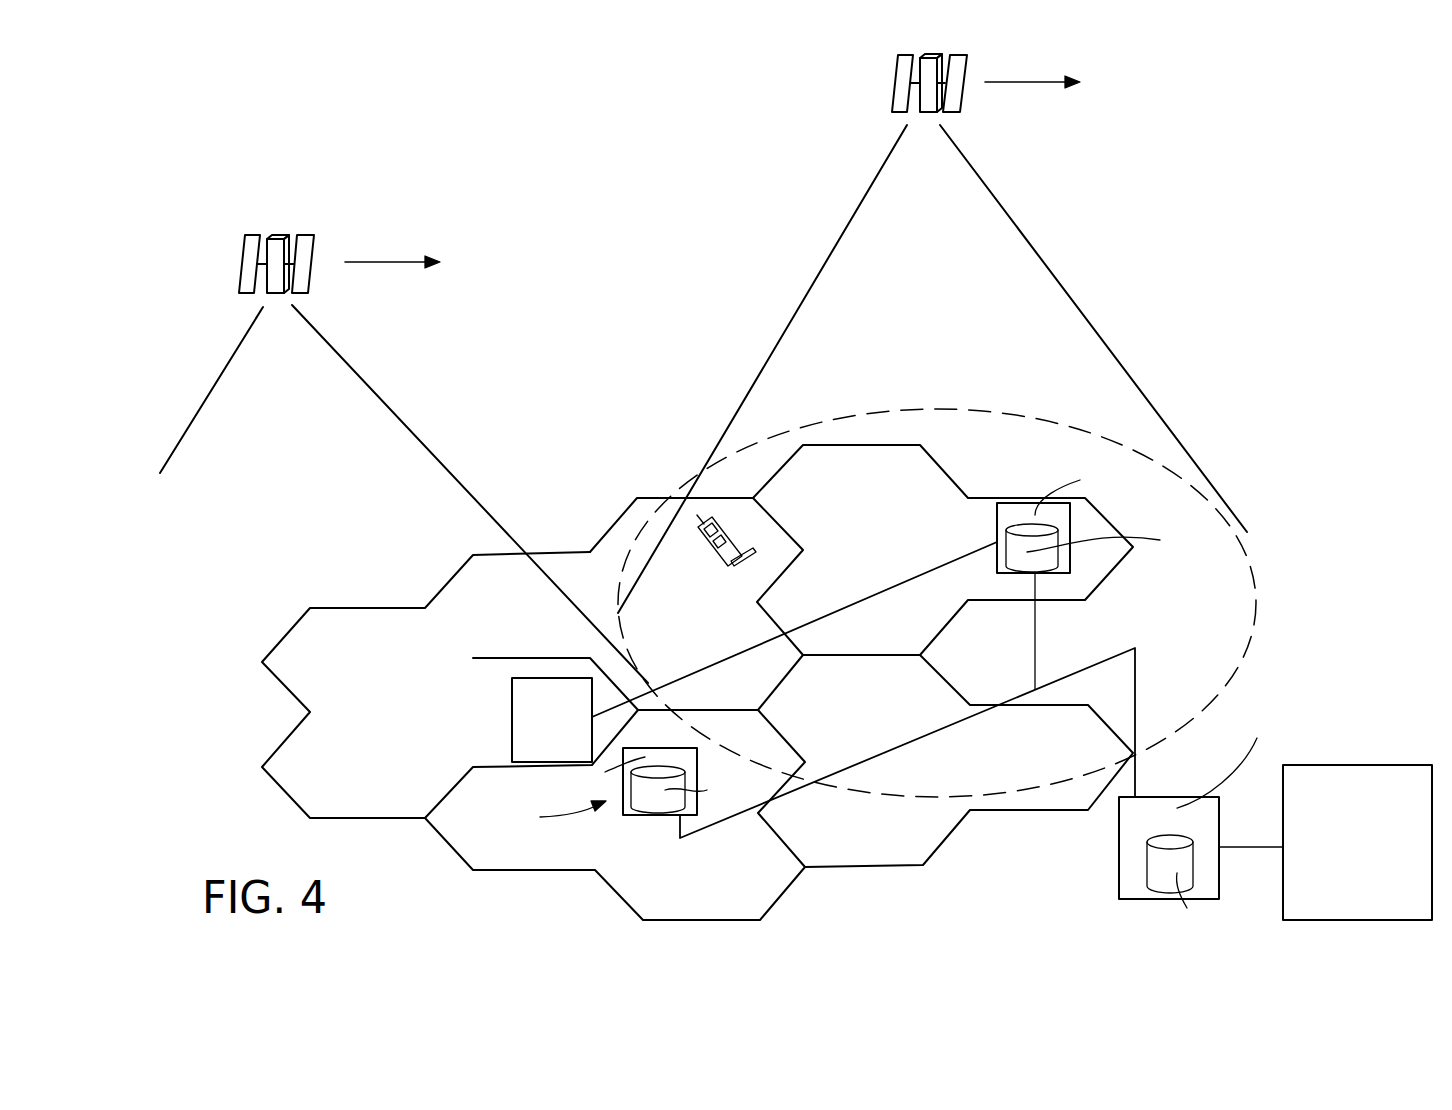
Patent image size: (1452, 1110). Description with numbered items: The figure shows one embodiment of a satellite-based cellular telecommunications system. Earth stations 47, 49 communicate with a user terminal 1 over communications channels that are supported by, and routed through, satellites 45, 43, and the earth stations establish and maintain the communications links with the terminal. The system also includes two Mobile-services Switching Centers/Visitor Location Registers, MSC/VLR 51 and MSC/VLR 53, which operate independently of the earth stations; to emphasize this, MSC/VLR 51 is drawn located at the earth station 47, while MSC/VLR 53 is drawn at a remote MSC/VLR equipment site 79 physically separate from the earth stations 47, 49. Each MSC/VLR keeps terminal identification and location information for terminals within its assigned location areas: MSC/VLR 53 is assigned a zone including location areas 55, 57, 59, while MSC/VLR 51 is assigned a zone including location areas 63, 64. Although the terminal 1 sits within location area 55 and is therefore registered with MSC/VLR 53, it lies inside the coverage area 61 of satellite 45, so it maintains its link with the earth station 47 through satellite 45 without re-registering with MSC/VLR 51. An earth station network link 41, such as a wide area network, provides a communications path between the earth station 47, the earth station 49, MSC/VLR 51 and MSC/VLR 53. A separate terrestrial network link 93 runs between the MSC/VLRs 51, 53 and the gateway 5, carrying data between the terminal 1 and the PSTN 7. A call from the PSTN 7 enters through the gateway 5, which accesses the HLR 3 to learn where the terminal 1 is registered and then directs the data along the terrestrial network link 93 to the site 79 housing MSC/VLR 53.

The user terminal 1 is at (722, 528).
The HLR 3 is at (1147, 865).
The gateway 5 is at (1158, 797).
The PSTN 7 is at (1377, 765).
The earth station network link (ENL) 41 is at (847, 605).
The satellite 43 is at (279, 236).
The satellite 45 is at (898, 83).
The earth station 47 is at (997, 513).
The earth station 49 is at (512, 711).
The MSC/VLR 51 is at (1050, 573).
The MSC/VLR 53 is at (660, 815).
The location area 55 is at (622, 522).
The location area 57 is at (343, 620).
The location area 59 is at (598, 853).
The coverage area 61 is at (1258, 588).
The location area 63 is at (937, 460).
The location area 64 is at (955, 832).
The remote MSC/VLR equipment site 79 is at (554, 817).
The terrestrial network link (TNL) 93 is at (952, 725).